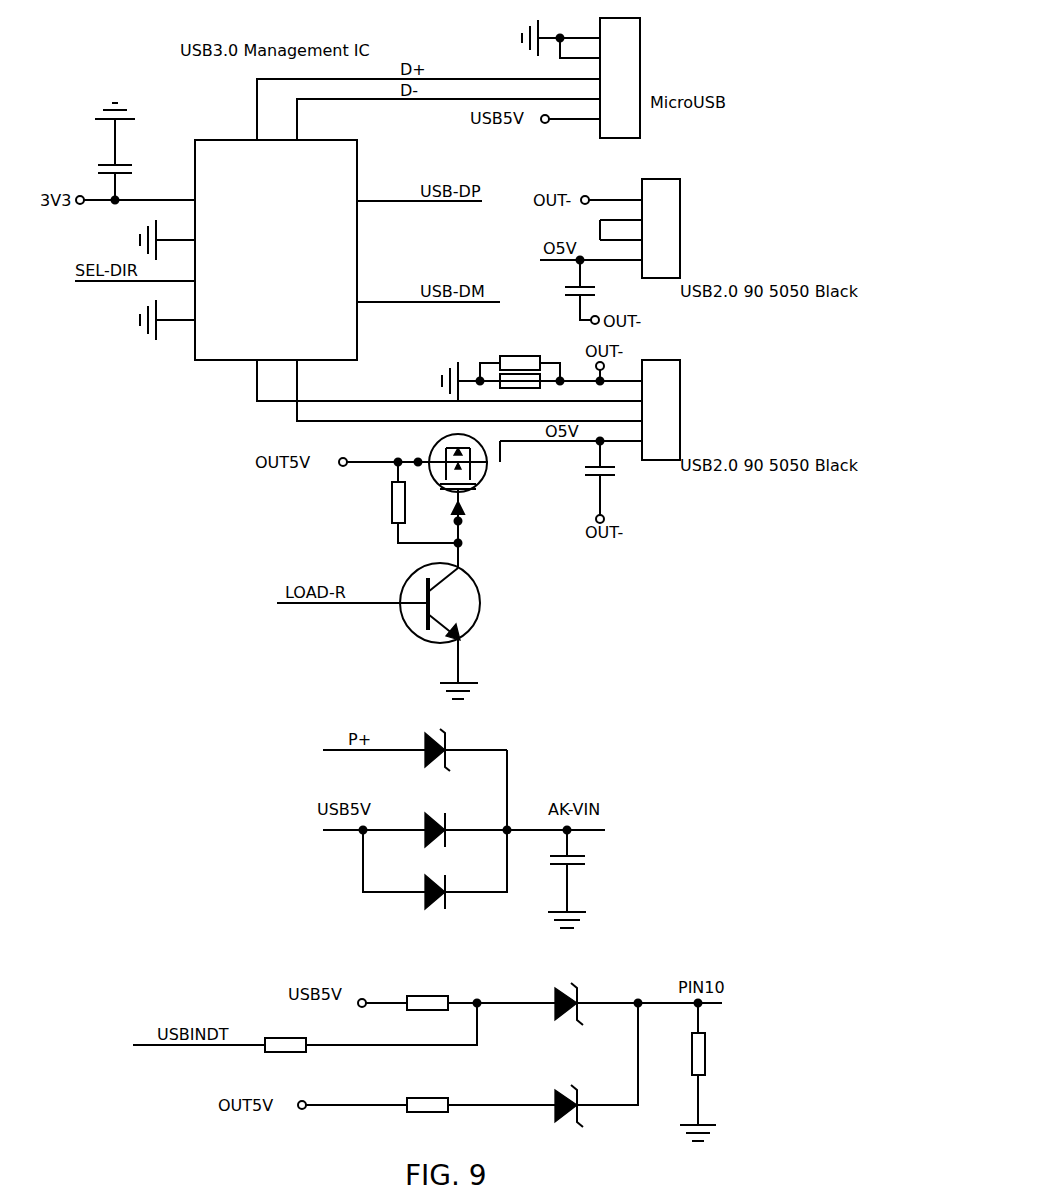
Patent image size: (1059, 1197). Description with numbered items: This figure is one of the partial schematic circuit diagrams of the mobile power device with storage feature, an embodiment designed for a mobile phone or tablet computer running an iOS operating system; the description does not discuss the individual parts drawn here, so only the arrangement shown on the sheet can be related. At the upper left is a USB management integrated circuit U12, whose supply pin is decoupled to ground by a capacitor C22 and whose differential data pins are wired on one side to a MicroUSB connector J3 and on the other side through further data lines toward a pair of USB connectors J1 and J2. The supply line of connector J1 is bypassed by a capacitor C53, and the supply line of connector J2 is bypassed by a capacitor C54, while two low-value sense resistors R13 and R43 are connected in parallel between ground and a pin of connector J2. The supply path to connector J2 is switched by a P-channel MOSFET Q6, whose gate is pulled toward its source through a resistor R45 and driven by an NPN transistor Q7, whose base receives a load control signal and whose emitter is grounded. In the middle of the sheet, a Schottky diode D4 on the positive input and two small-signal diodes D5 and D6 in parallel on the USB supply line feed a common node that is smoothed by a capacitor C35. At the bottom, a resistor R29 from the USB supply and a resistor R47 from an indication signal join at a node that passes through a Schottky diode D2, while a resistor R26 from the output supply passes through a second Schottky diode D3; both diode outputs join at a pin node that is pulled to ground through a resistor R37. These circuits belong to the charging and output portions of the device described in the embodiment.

The USB3.0 management IC U12 is at (279, 253).
The 0.1uF capacitor C22 is at (86, 151).
The MicroUSB connector J3 is at (620, 69).
The USB2.0 90 5050 Black connector J1 is at (661, 219).
The USB2.0 90 5050 Black connector J2 is at (661, 400).
The 0.1uF capacitor C53 is at (606, 292).
The 0.1uF capacitor C54 is at (627, 482).
The R050 1% resistor R13 is at (497, 342).
The R050 1% resistor R43 is at (497, 361).
The AO3401 P-MOSFET Q6 is at (484, 478).
The 510K resistor R45 is at (377, 502).
The NPN transistor Q7 is at (452, 602).
The SS14 Schottky diode D4 is at (446, 744).
The 1N4148 diode D5 is at (450, 823).
The 1N4148 diode D6 is at (449, 907).
The 10uF capacitor C35 is at (590, 870).
The 1K resistor R29 is at (418, 1005).
The 100K resistor R47 is at (286, 1046).
The 1K resistor R26 is at (418, 1106).
The RB521S30 Schottky diode D2 is at (566, 1012).
The RB521S30 Schottky diode D3 is at (566, 1110).
The 5.1K resistor R37 is at (719, 1053).